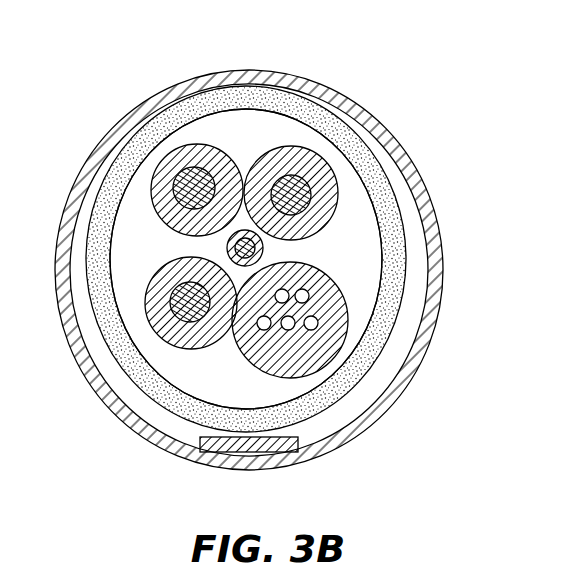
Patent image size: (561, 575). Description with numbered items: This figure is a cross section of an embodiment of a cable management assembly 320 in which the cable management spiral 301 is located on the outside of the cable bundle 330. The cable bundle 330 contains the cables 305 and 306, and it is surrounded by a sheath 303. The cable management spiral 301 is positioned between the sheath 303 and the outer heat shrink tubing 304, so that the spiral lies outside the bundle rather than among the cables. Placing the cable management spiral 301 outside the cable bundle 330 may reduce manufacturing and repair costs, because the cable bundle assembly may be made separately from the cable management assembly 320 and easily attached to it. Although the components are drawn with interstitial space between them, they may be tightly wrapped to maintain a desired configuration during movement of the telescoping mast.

The cable management spiral 301 is at (285, 444).
The sheath 303 is at (377, 345).
The heat shrink tubing 304 is at (433, 310).
The cables 305 is at (283, 153).
The cable 306 is at (227, 248).
The cable management assembly 320 is at (268, 254).
The cable bundle 330 is at (367, 250).